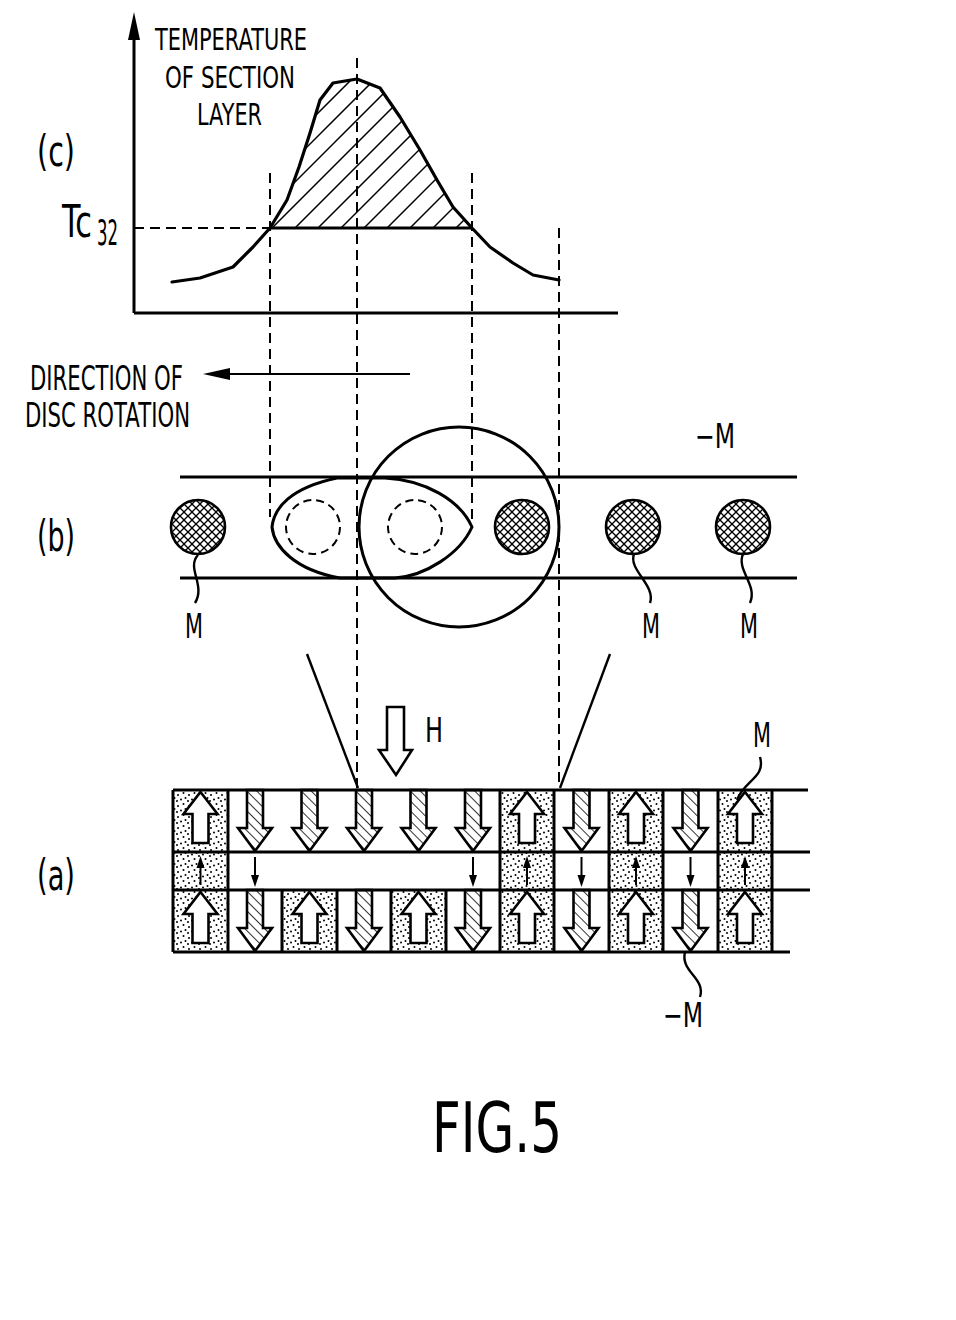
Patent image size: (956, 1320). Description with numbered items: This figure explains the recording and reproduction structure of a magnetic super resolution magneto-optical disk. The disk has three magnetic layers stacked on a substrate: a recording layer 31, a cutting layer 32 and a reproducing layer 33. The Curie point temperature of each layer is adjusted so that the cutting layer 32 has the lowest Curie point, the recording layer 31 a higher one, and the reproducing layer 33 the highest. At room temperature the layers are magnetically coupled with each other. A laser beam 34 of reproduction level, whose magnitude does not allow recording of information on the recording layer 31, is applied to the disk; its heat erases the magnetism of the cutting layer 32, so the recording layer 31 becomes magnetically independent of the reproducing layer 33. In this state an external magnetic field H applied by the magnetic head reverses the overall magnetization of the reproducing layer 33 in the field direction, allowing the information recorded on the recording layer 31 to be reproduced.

The recording layer 31 is at (773, 917).
The cutting layer 32 is at (773, 867).
The reproducing layer 33 is at (770, 818).
The laser beam 34 is at (508, 437).